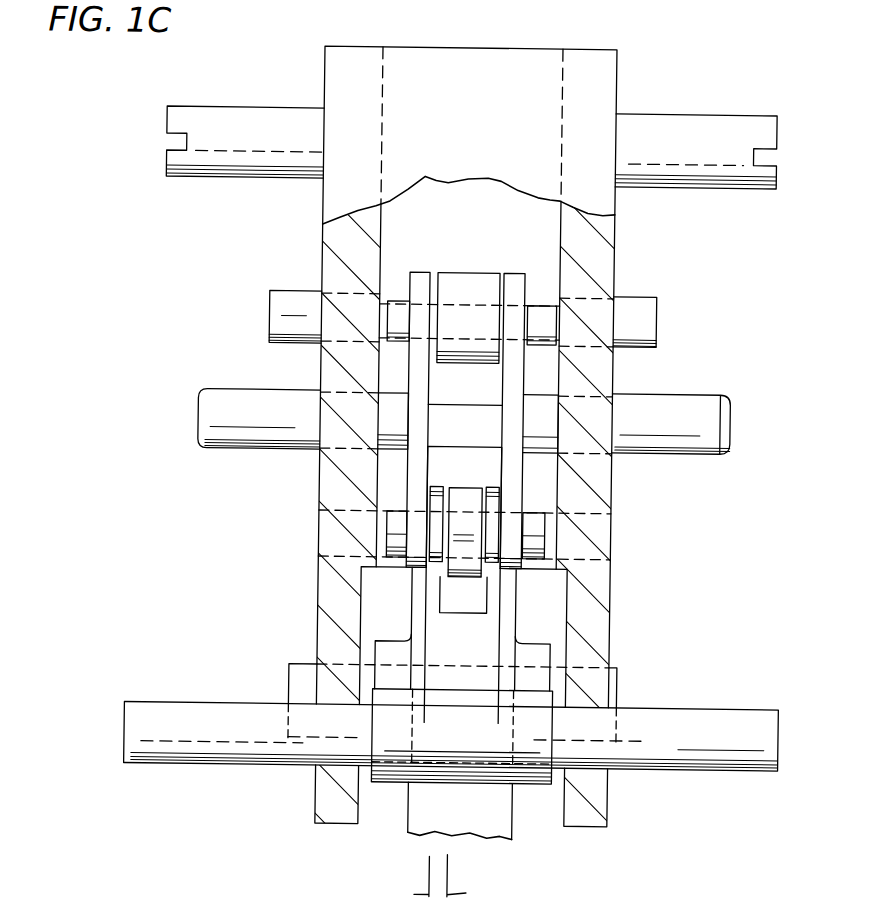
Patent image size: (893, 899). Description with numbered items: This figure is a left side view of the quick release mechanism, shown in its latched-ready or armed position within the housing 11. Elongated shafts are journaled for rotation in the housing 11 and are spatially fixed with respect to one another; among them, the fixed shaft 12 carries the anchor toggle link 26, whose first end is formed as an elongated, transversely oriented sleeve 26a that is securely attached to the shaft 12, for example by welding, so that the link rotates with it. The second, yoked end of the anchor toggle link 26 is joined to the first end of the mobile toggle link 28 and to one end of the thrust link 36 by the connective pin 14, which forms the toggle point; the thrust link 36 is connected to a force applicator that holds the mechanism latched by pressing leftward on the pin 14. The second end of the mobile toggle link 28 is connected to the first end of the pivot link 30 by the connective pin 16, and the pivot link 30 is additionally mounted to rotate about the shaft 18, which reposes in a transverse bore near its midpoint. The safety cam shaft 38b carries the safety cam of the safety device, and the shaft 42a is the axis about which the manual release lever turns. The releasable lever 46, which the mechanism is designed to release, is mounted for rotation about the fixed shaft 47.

The housing 11 is at (497, 58).
The safety cam shaft 38b is at (210, 171).
The shaft 18 is at (274, 320).
The connective pin 16 is at (557, 322).
The shaft 42a is at (697, 392).
The mobile toggle link 28 is at (412, 471).
The pivot link 30 is at (466, 273).
The connective pin 14 is at (558, 537).
The thrust link 36 is at (478, 490).
The anchor toggle link 26 is at (445, 630).
The fixed shaft 47 is at (631, 678).
The shaft 12 is at (704, 757).
The sleeve 26a is at (439, 768).
The releasable lever 46 is at (517, 812).